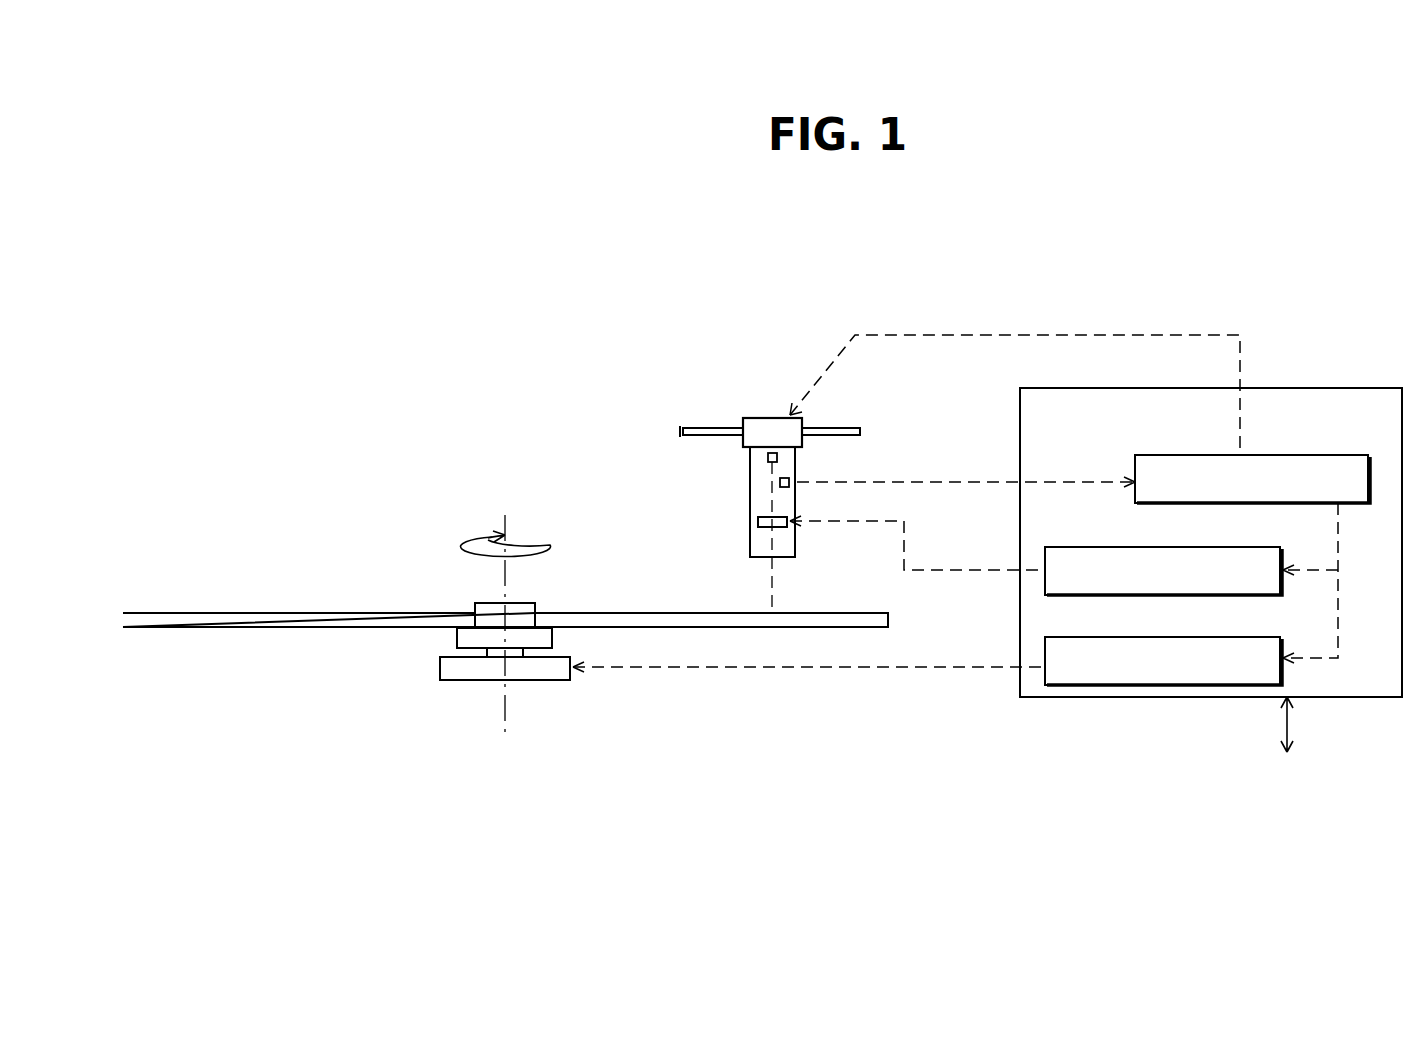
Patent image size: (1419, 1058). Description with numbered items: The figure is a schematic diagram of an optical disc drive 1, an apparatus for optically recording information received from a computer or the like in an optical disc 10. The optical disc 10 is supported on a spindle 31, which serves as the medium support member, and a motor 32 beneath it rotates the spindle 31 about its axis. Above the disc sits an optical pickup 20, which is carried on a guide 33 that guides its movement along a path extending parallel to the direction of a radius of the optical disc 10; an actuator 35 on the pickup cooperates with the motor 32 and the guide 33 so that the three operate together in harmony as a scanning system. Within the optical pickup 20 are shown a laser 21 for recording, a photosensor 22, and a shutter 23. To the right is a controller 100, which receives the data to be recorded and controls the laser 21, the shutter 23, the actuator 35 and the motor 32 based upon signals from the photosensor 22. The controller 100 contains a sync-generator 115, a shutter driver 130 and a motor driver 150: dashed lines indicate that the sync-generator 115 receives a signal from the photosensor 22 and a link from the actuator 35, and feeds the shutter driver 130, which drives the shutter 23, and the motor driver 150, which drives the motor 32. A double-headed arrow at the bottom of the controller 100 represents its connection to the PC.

The optical disc drive 1 is at (425, 397).
The optical disc 10 is at (330, 614).
The optical pickup 20 is at (745, 414).
The laser 21 is at (768, 458).
The photosensor 22 is at (789, 478).
The shutter 23 is at (758, 522).
The spindle 31 is at (528, 608).
The motor 32 is at (542, 672).
The guide 33 is at (856, 427).
The actuator 35 is at (771, 421).
The controller 100 is at (1331, 388).
The sync-generator 115 is at (1292, 456).
The shutter driver 130 is at (1045, 558).
The motor driver 150 is at (1045, 654).